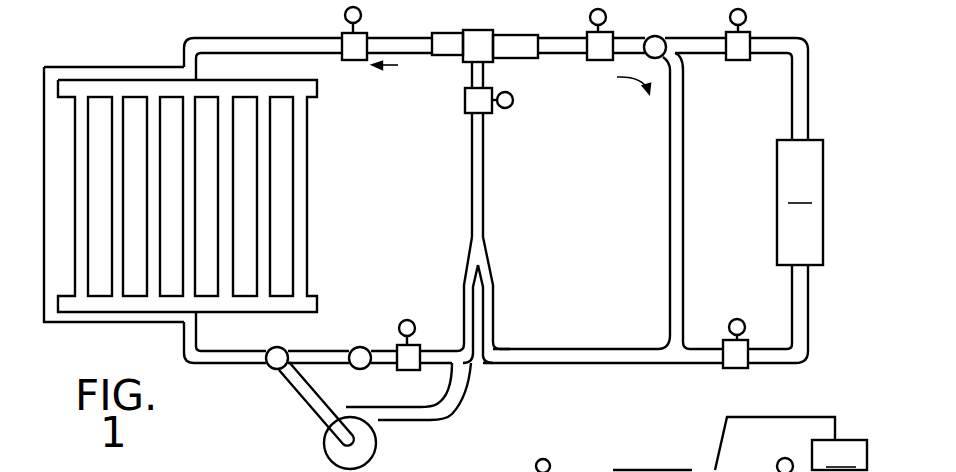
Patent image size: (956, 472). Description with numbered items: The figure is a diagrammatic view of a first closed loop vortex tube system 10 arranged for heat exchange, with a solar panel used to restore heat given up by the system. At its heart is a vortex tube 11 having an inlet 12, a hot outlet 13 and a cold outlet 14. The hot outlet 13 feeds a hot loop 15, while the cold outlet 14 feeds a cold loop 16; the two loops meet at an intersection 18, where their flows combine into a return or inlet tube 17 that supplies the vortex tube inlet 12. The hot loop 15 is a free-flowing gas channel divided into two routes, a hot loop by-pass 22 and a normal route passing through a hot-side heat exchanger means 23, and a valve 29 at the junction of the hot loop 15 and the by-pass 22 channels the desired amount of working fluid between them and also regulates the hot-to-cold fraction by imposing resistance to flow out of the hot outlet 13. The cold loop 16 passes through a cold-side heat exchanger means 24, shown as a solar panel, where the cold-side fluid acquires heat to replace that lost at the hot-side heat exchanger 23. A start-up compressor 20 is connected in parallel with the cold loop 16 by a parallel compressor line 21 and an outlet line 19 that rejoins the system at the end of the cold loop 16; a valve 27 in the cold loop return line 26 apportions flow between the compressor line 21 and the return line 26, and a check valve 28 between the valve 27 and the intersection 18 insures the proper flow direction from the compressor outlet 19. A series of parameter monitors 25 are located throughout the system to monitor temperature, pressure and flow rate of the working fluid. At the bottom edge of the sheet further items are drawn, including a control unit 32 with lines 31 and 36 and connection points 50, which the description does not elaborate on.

The closed loop vortex tube system 10 is at (840, 41).
The vortex tube 11 is at (461, 28).
The inlet 12 is at (484, 70).
The hot outlet 13 is at (528, 53).
The cold outlet 14 is at (449, 50).
The hot loop 15 is at (569, 40).
The cold loop 16 is at (194, 43).
The inlet tube 17 is at (482, 202).
The intersection 18 is at (502, 262).
The outlet line 19 is at (452, 385).
The start-up compressor 20 is at (326, 454).
The parallel compressor line 21 is at (293, 393).
The hot loop by-pass 22 is at (679, 245).
The hot-side heat exchanger means 23 is at (800, 202).
The cold-side heat exchanger means 24 is at (336, 223).
The parameter monitors 25 is at (345, 15).
The cold loop return line 26 is at (433, 350).
The valve 27 is at (278, 346).
The check valve 28 is at (373, 327).
The valve 29 is at (661, 37).
The control line 31 is at (653, 468).
The controller 32 is at (791, 443).
The line 36 is at (598, 468).
The sensor connection 50 is at (533, 462).